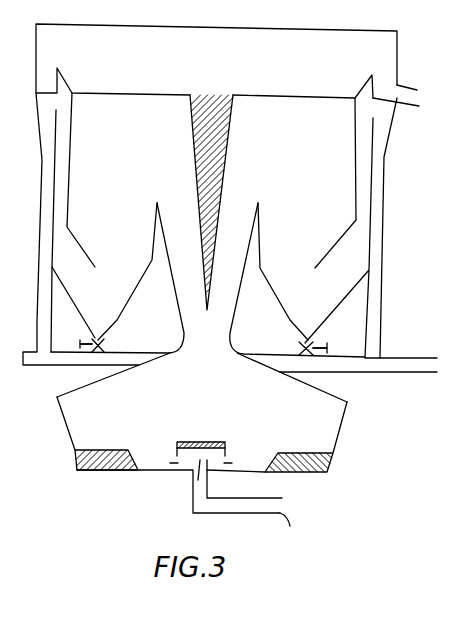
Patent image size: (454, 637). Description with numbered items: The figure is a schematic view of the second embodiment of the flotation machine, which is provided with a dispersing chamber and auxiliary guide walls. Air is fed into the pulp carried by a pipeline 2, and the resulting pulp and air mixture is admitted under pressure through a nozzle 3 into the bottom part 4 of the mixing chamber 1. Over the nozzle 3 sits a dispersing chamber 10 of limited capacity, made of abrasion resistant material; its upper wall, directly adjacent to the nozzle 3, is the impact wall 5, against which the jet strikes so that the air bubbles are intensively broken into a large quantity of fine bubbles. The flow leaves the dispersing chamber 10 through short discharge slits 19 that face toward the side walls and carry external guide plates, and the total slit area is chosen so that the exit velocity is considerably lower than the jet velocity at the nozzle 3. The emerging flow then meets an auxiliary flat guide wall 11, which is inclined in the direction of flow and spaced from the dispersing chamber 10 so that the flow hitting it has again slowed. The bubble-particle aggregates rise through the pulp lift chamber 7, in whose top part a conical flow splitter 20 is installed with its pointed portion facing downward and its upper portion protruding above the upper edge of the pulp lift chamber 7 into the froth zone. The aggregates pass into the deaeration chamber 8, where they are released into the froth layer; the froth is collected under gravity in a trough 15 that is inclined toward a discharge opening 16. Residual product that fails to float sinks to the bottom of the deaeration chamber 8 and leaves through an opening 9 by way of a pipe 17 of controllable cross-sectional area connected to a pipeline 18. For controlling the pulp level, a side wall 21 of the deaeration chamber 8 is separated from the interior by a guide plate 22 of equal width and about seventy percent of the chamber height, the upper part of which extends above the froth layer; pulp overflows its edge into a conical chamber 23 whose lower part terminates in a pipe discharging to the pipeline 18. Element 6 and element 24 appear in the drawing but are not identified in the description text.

The mixing chamber 1 is at (64, 432).
The pipeline 2 is at (291, 525).
The nozzle 3 is at (193, 497).
The bottom part 4 is at (335, 444).
The impact wall 5 is at (176, 452).
The collecting hopper 6 is at (336, 397).
The pulp lift chamber 7 is at (243, 318).
The deaeration chamber 8 is at (269, 242).
The opening 9 is at (98, 336).
The dispersing chamber 10 is at (234, 443).
The auxiliary flat guide wall 11 is at (280, 475).
The trough 15 is at (410, 88).
The discharge opening 16 is at (385, 80).
The pipe 17 is at (107, 343).
The pipeline 18 is at (403, 372).
The discharge slits 19 is at (228, 466).
The conical flow splitter 20 is at (225, 170).
The side wall 21 is at (370, 253).
The guide plate 22 is at (357, 217).
The chamber 23 is at (384, 143).
The flange 24 is at (373, 343).